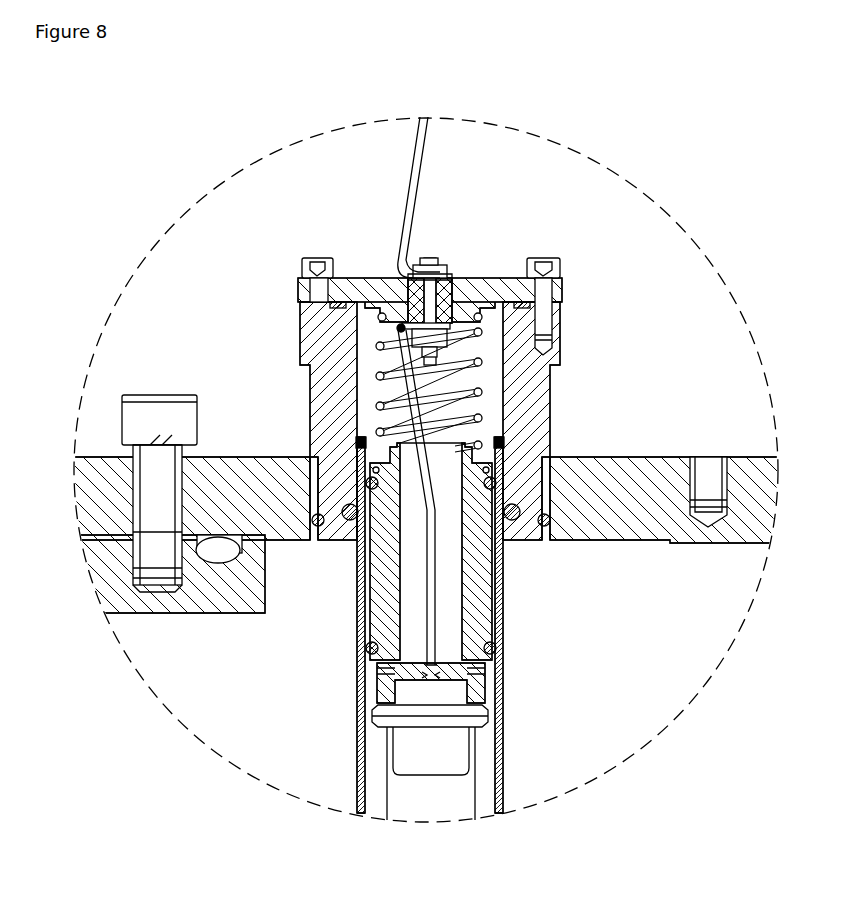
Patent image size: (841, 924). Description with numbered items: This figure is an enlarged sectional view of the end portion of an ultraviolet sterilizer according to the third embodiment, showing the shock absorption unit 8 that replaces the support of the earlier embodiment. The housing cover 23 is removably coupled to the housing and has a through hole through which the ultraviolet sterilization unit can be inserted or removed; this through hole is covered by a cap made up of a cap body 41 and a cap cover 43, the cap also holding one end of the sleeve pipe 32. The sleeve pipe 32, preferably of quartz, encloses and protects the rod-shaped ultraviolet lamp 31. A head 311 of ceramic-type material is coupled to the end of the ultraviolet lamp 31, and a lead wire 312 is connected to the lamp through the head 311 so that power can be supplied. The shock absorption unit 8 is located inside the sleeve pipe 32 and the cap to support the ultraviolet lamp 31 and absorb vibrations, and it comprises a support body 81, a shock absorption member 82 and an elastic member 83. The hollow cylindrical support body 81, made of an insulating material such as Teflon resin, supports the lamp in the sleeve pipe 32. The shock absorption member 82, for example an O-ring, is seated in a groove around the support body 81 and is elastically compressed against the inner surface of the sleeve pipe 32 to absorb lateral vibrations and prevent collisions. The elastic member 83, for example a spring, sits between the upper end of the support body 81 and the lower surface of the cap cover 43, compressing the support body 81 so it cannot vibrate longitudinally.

The shock absorption unit 8 is at (273, 598).
The housing cover 23 is at (117, 522).
The ultraviolet lamp 31 is at (490, 830).
The sleeve pipe 32 is at (358, 763).
The cap body 41 is at (525, 385).
The cap cover 43 is at (493, 252).
The support body 81 is at (374, 603).
The shock absorption member 82 is at (363, 660).
The elastic member 83 is at (360, 434).
The head 311 is at (430, 706).
The lead wire 312 is at (432, 619).